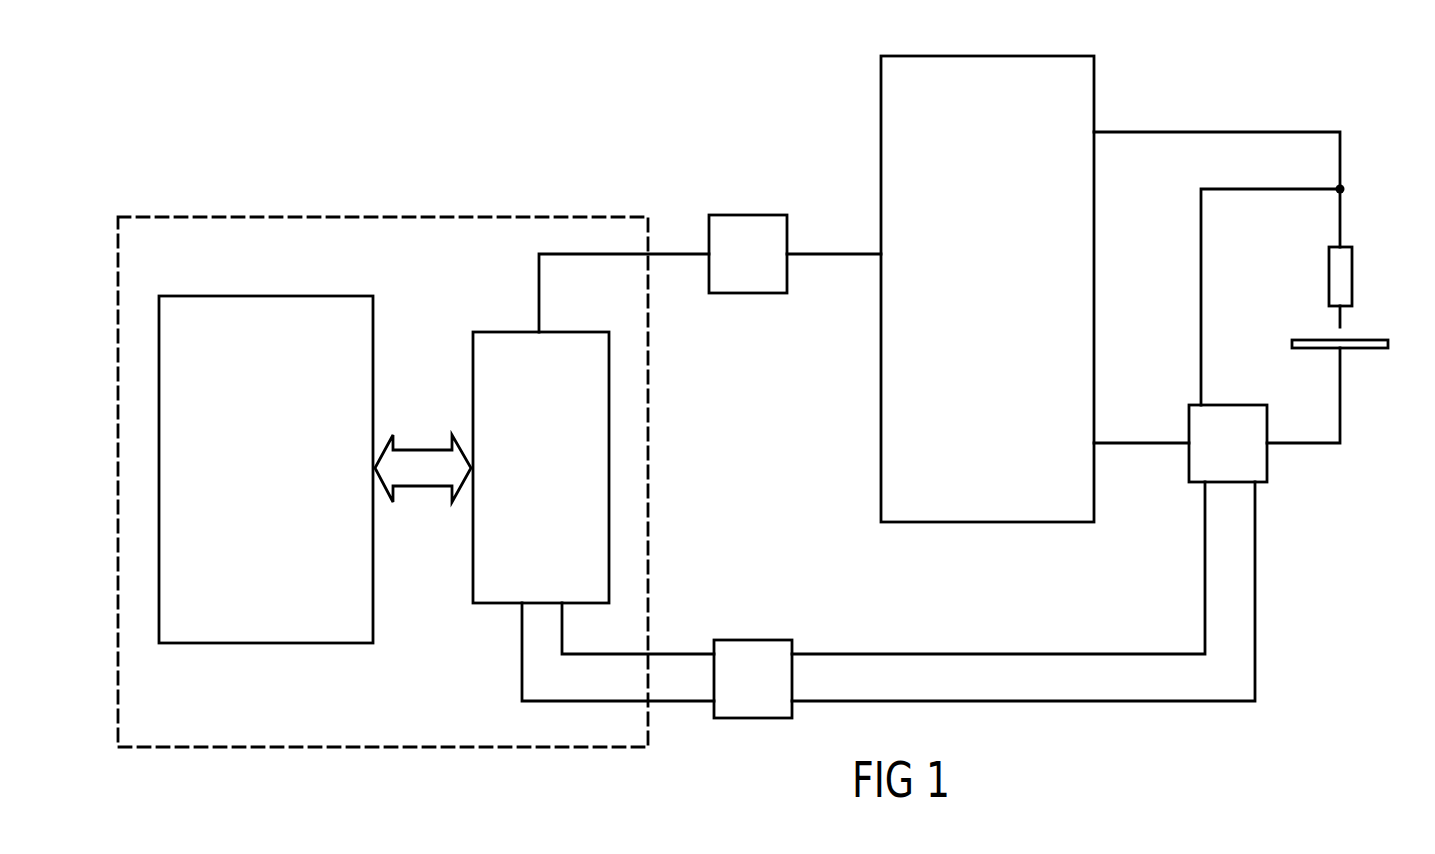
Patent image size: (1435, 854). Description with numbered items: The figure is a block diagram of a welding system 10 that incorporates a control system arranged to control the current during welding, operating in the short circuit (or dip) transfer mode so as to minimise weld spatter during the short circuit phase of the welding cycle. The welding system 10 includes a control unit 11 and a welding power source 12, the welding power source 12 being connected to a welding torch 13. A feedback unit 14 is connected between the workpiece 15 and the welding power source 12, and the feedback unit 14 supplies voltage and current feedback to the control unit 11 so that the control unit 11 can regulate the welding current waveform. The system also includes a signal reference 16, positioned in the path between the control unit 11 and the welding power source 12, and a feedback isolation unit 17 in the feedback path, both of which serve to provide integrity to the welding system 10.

The welding system 10 is at (714, 92).
The control unit 11 is at (403, 243).
The welding power source 12 is at (1050, 95).
The welding torch 13 is at (1343, 275).
The feedback unit 14 is at (1248, 457).
The workpiece 15 is at (1362, 346).
The signal reference 16 is at (738, 237).
The feedback isolation unit 17 is at (762, 658).